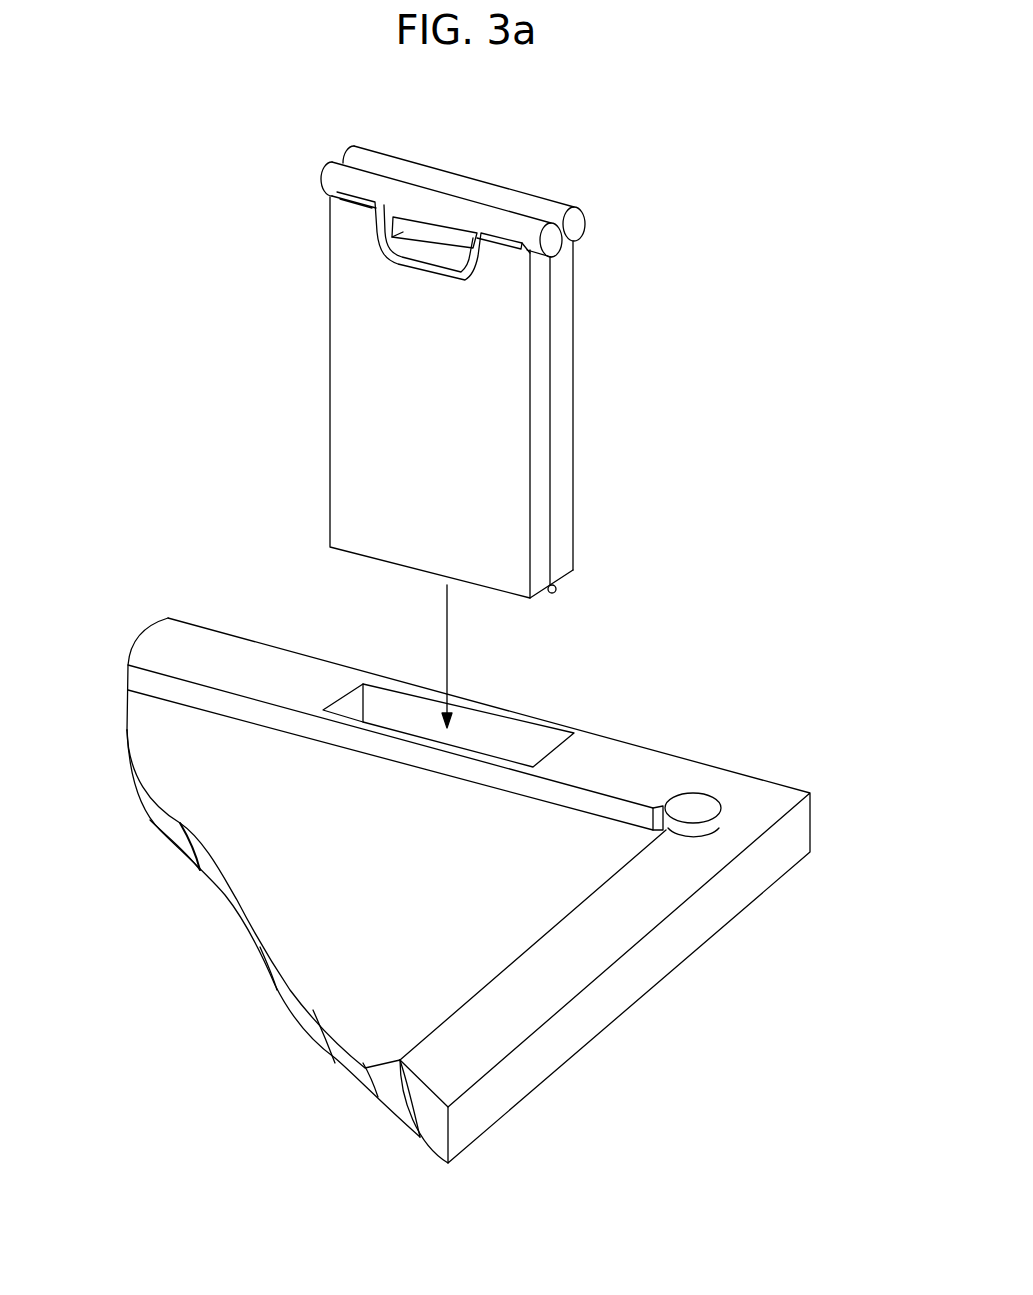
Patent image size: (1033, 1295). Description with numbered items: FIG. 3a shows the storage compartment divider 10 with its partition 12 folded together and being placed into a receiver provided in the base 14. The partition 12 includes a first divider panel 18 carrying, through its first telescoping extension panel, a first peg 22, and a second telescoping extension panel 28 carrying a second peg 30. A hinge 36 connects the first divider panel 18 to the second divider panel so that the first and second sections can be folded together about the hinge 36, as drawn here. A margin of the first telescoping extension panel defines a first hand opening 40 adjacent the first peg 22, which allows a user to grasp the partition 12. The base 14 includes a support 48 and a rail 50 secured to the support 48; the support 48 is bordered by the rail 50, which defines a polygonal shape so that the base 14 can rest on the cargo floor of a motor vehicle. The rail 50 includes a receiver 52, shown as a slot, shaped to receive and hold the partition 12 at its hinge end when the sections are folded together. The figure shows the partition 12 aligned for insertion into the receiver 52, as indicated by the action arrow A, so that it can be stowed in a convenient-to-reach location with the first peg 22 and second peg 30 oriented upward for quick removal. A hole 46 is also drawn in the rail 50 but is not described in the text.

The storage compartment divider 10 is at (207, 243).
The partition 12 is at (628, 308).
The base 14 is at (142, 608).
The first divider panel 18 is at (378, 370).
The first peg 22 is at (413, 200).
The second telescoping extension panel 28 is at (573, 400).
The second peg 30 is at (513, 195).
The hinge 36 is at (554, 595).
The first hand opening 40 is at (410, 267).
The hole 46 is at (712, 808).
The support 48 is at (395, 885).
The rail 50 is at (648, 752).
The receiver 52 is at (503, 740).